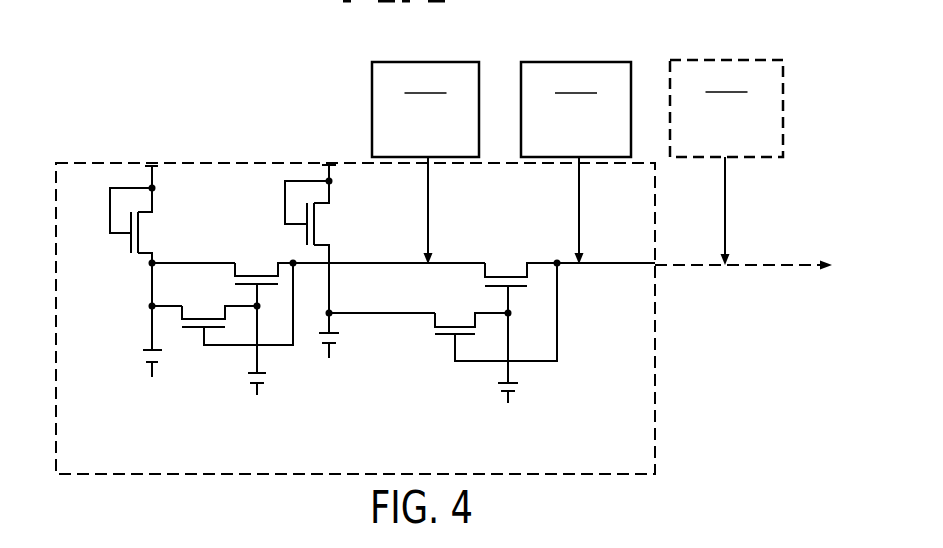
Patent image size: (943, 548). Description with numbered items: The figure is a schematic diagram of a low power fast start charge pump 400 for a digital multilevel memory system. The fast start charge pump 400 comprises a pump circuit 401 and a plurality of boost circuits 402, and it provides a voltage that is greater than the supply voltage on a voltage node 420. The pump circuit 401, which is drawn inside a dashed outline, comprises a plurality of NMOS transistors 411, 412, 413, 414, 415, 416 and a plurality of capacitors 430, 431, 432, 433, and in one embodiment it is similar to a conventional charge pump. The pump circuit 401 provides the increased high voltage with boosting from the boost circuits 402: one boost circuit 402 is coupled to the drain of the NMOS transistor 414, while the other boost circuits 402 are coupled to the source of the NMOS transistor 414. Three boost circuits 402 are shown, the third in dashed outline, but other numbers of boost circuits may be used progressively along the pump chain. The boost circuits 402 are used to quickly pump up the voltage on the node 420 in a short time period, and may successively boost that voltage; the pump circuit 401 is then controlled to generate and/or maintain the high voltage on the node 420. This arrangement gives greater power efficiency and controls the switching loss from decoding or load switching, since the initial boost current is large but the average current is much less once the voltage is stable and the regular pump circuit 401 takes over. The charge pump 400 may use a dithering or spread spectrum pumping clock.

The fast start charge pump 400 is at (672, 38).
The pump circuit 401 is at (393, 466).
The boost circuit 402 is at (577, 162).
The NMOS transistor 411 is at (145, 233).
The NMOS transistor 412 is at (322, 227).
The NMOS transistor 413 is at (256, 267).
The NMOS transistor 414 is at (510, 268).
The NMOS transistor 415 is at (193, 332).
The NMOS transistor 416 is at (438, 337).
The voltage node 420 is at (808, 265).
The capacitor 430 is at (147, 360).
The capacitor 431 is at (334, 340).
The capacitor 432 is at (267, 381).
The capacitor 433 is at (517, 389).